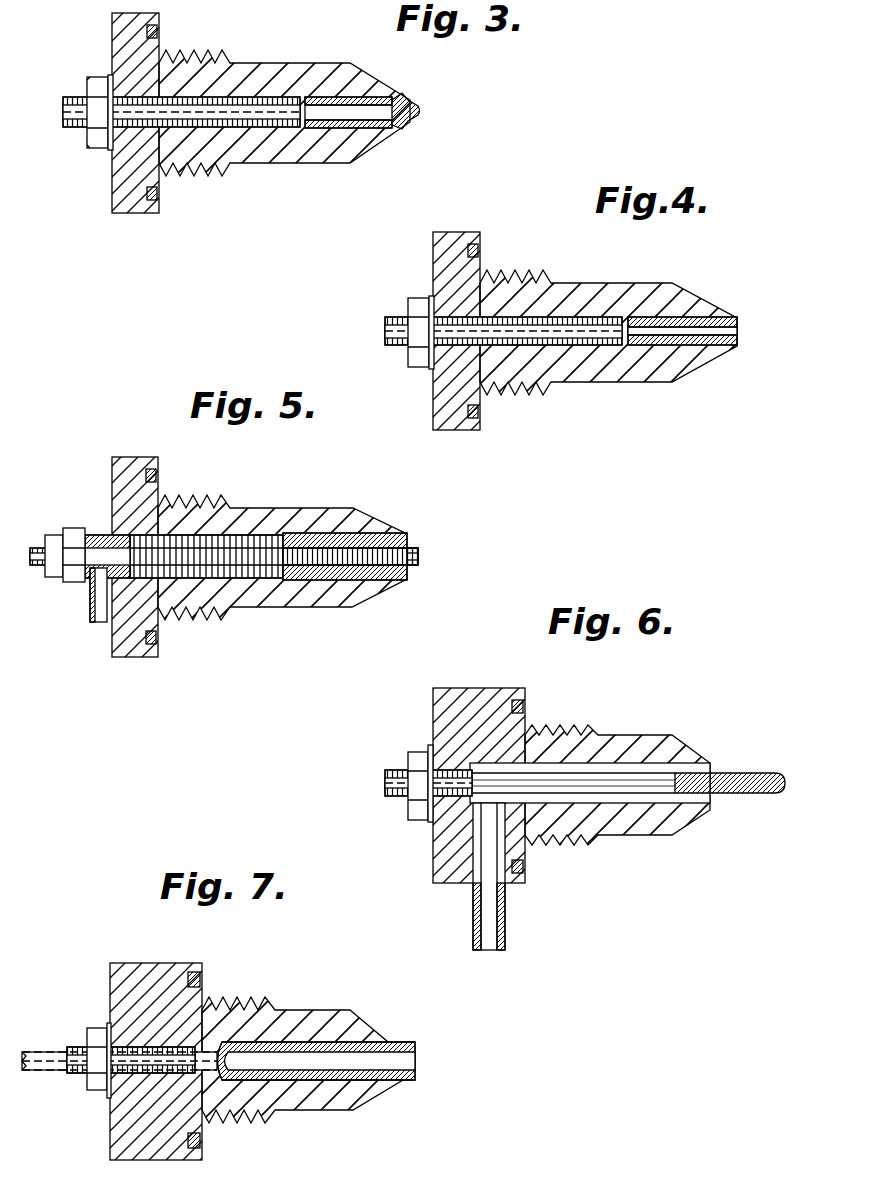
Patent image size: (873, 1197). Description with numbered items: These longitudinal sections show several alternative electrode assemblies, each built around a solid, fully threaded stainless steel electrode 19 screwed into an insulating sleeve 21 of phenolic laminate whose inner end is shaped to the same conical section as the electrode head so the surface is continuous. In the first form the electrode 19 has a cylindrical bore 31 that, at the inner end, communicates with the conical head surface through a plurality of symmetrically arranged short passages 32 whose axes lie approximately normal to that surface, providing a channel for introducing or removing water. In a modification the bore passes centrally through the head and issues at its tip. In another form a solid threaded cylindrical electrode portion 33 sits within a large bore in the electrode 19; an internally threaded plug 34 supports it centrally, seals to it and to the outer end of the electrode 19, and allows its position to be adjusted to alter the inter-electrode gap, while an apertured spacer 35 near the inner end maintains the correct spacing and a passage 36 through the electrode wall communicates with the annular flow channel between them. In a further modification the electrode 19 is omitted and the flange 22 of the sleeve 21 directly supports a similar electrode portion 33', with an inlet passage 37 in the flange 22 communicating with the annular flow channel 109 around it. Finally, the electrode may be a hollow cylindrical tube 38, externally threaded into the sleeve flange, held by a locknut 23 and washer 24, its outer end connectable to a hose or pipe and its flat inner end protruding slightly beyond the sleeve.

In FIG. 3, the electrode 19 is at (258, 128).
In FIG. 4, the electrode 19 is at (590, 348).
In FIG. 5, the electrode 19 is at (258, 566).
In FIG. 3, the insulating sleeve 21 is at (313, 80).
In FIG. 4, the insulating sleeve 21 is at (638, 302).
In FIG. 5, the insulating sleeve 21 is at (298, 522).
In FIG. 6, the insulating sleeve 21 is at (642, 753).
In FIG. 7, the insulating sleeve 21 is at (318, 1027).
In FIG. 6, the flange 22 is at (484, 702).
In FIG. 7, the locknut 23 is at (92, 1089).
In FIG. 7, the washer 24 is at (108, 1030).
In FIG. 3, the cylindrical bore 31 is at (346, 130).
In FIG. 4, the cylindrical bore 31 is at (662, 348).
In FIG. 3, the short passages 32 is at (404, 109).
In FIG. 5, the electrode portion 33 is at (53, 574).
In FIG. 6, the electrode portion 33' is at (424, 765).
In FIG. 5, the internally threaded plug 34 is at (73, 536).
In FIG. 5, the apertured spacer 35 is at (312, 545).
In FIG. 5, the passage 36 is at (92, 614).
In FIG. 6, the inlet passage 37 is at (487, 838).
In FIG. 7, the hollow cylindrical tube 38 is at (376, 1062).
In FIG. 6, the annular flow channel 109 is at (635, 804).